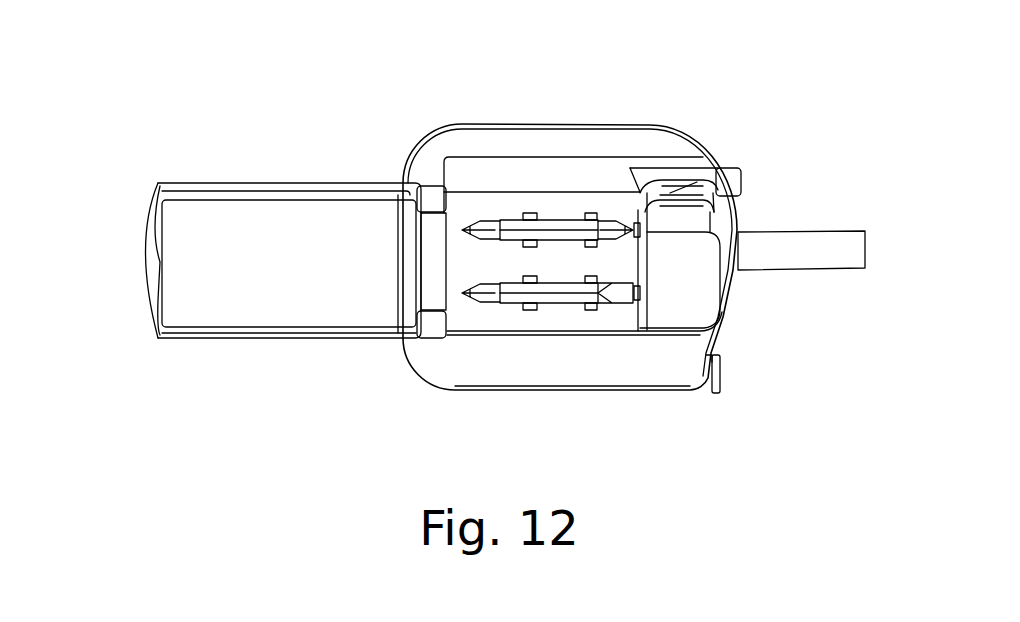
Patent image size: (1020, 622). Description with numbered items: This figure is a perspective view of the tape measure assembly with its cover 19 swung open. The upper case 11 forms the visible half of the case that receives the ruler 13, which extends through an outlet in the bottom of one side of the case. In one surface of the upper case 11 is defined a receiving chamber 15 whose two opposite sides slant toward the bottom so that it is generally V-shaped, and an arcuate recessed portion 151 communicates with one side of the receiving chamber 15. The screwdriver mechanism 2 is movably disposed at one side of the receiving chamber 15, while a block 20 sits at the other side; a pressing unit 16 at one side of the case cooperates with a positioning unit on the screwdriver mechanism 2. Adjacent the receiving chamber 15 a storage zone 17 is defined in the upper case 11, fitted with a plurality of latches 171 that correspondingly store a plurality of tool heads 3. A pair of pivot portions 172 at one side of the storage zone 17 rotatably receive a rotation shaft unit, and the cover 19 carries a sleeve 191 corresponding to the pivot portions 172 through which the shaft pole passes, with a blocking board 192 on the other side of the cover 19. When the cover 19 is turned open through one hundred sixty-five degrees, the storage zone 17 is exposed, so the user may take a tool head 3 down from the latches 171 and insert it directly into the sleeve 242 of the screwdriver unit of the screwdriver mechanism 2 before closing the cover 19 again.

The screwdriver mechanism 2 is at (836, 260).
The tool heads 3 is at (578, 300).
The upper case 11 is at (633, 142).
The ruler 13 is at (720, 363).
The receiving chamber 15 is at (675, 170).
The pressing unit 16 is at (728, 178).
The storage zone 17 is at (470, 210).
The cover 19 is at (249, 232).
The block 20 is at (705, 280).
The arcuate recessed portion 151 is at (567, 175).
The latches 171 is at (525, 312).
The pivot portions 172 is at (430, 185).
The sleeve 191 is at (428, 289).
The blocking board 192 is at (148, 270).
The sleeve 242 is at (850, 250).